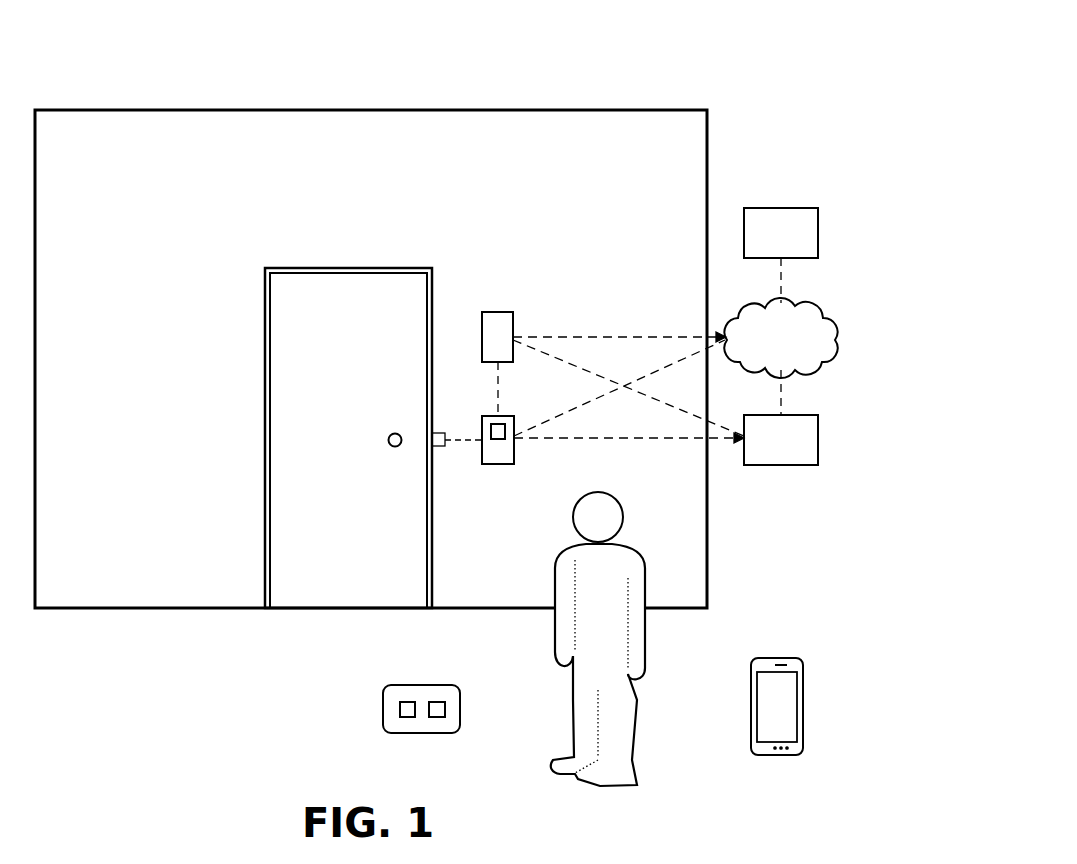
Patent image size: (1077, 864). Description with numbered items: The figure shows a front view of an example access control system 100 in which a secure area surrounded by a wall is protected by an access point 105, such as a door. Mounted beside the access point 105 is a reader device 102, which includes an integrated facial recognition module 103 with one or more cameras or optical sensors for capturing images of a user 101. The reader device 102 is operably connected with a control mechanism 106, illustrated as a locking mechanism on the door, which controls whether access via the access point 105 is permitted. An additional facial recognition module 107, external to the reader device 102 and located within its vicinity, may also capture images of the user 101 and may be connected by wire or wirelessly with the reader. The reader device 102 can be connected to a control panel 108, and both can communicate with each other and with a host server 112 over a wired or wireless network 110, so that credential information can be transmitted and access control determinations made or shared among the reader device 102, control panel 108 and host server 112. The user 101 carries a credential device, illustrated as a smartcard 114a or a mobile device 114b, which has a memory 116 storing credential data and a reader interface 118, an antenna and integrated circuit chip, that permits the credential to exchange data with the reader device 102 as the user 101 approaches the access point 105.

The access control system 100 is at (664, 39).
The user 101 is at (645, 660).
The reader device 102 is at (492, 416).
The facial recognition module 103 is at (482, 430).
The access point 105 is at (417, 317).
The control mechanism 106 is at (438, 447).
The facial recognition module 107 is at (514, 318).
The control panel 108 is at (770, 465).
The network 110 is at (812, 370).
The host server 112 is at (803, 258).
The smartcard 114a is at (409, 715).
The mobile device 114b is at (751, 705).
The memory 116 is at (412, 718).
The reader interface 118 is at (446, 704).